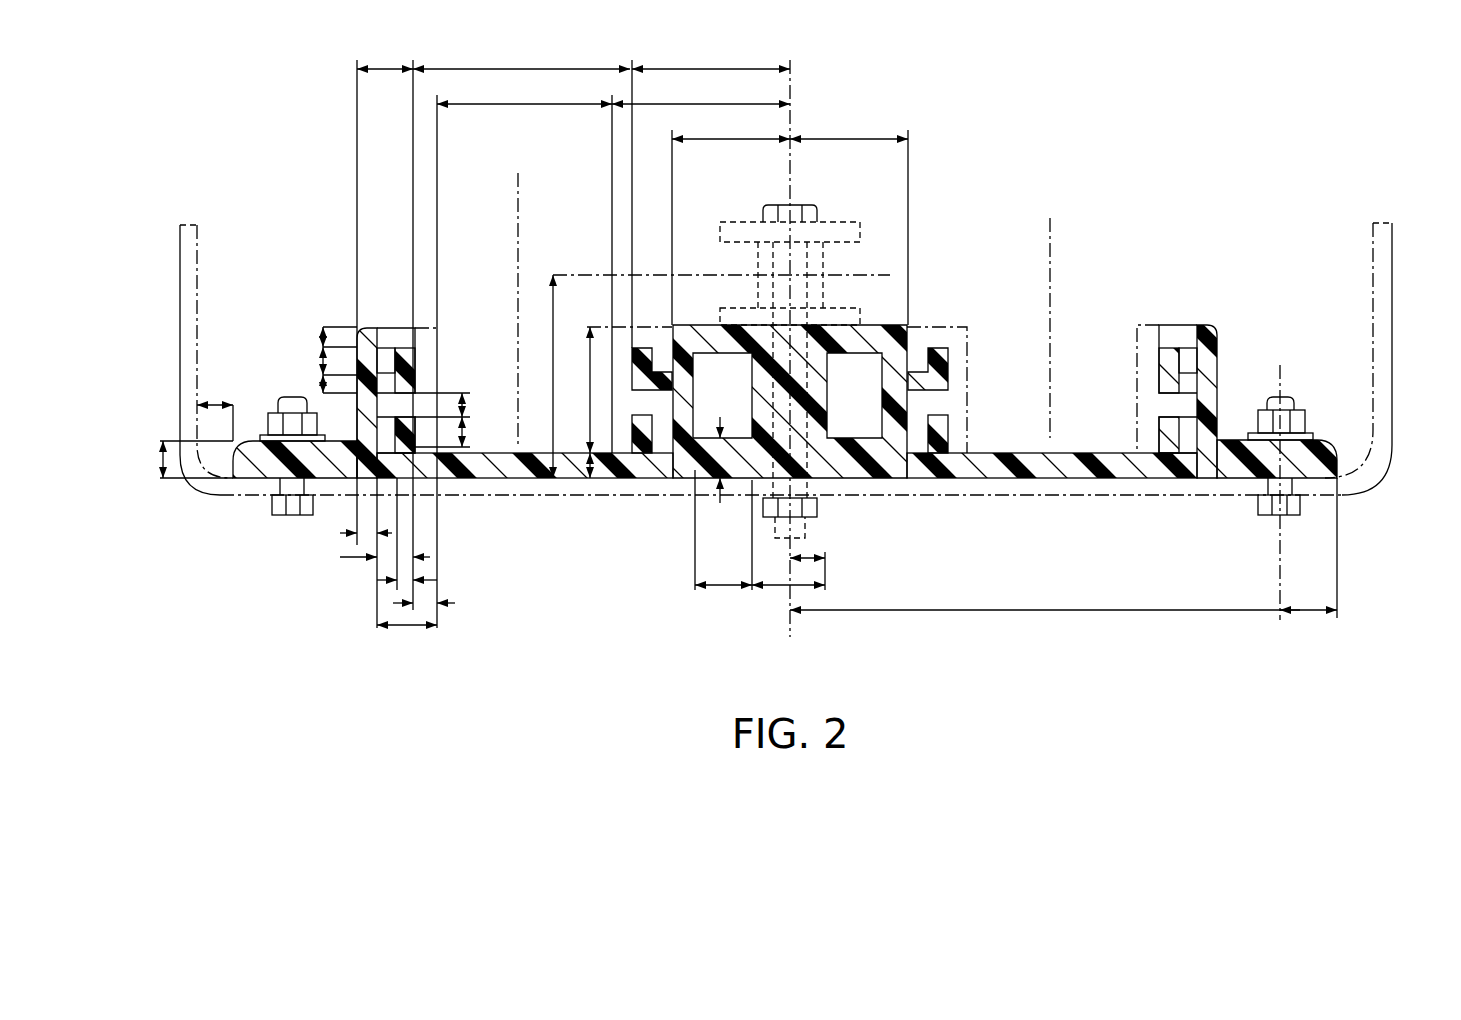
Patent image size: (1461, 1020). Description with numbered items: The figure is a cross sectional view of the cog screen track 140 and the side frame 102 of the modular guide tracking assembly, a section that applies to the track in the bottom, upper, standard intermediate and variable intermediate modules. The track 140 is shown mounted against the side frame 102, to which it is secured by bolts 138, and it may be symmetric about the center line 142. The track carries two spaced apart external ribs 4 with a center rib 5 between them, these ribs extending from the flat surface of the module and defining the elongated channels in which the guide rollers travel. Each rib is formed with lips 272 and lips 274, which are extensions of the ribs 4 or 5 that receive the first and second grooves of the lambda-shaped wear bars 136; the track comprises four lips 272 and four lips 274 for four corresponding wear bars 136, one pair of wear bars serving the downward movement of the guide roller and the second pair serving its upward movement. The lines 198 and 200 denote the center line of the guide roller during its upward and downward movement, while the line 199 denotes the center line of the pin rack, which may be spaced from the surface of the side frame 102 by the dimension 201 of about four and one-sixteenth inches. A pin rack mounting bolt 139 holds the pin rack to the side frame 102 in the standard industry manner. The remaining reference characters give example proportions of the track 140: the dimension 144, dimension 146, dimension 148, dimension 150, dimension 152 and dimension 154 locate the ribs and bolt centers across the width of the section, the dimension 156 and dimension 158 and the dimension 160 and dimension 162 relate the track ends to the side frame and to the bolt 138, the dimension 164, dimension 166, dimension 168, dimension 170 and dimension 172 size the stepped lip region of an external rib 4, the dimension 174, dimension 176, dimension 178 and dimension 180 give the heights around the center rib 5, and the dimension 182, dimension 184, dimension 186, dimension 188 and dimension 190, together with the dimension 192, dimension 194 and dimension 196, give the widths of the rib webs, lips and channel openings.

The side frame 102 is at (1392, 447).
The wear bar 136 is at (395, 323).
The bolts 138 is at (272, 508).
The pin rack mounting bolt 139 is at (817, 210).
The cog screen track 140 is at (1060, 482).
The center line 142 is at (793, 175).
The dimension 144 is at (385, 68).
The dimension 146 is at (500, 63).
The dimension 148 is at (690, 67).
The dimension 150 is at (515, 110).
The dimension 152 is at (667, 103).
The dimension 154 is at (717, 145).
The dimension 156 is at (217, 402).
The dimension 158 is at (163, 480).
The dimension 160 is at (1282, 614).
The dimension 162 is at (997, 609).
The dimension 164 is at (320, 337).
The dimension 166 is at (320, 360).
The dimension 168 is at (320, 385).
The dimension 170 is at (463, 395).
The dimension 172 is at (463, 428).
The dimension 174 is at (577, 324).
The dimension 176 is at (582, 480).
The dimension 178 is at (720, 481).
The dimension 180 is at (705, 323).
The dimension 182 is at (362, 536).
The dimension 184 is at (405, 578).
The dimension 186 is at (380, 562).
The dimension 188 is at (428, 600).
The dimension 190 is at (405, 630).
The dimension 192 is at (823, 556).
The dimension 194 is at (720, 588).
The dimension 196 is at (782, 587).
The guide roller center line 198 is at (517, 193).
The pin rack center line 199 is at (688, 275).
The guide roller center line 200 is at (1048, 243).
The dimension 201 is at (553, 285).
The lips 272 is at (410, 360).
The lips 274 is at (403, 440).
The external ribs 4 is at (368, 332).
The center rib 5 is at (903, 325).